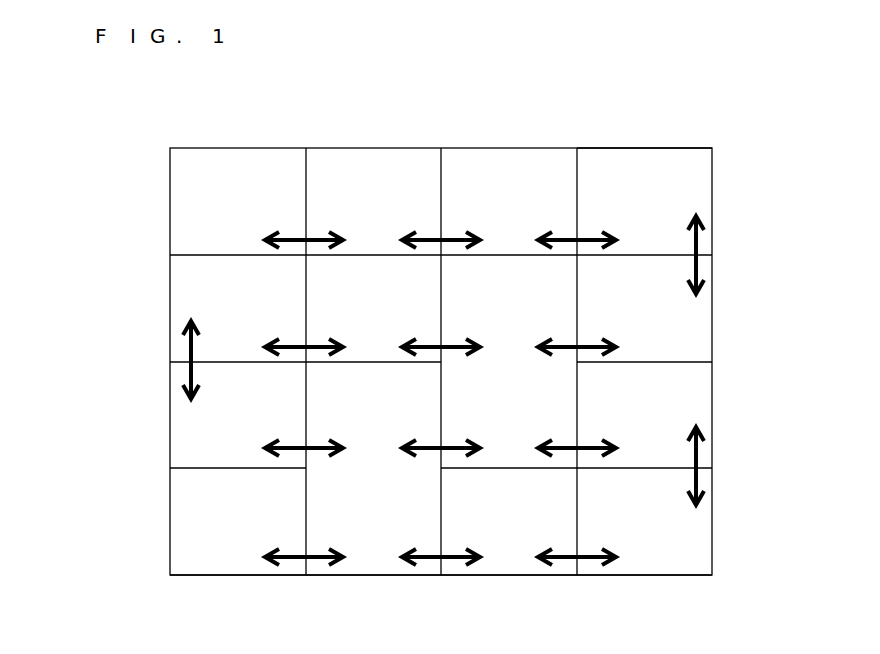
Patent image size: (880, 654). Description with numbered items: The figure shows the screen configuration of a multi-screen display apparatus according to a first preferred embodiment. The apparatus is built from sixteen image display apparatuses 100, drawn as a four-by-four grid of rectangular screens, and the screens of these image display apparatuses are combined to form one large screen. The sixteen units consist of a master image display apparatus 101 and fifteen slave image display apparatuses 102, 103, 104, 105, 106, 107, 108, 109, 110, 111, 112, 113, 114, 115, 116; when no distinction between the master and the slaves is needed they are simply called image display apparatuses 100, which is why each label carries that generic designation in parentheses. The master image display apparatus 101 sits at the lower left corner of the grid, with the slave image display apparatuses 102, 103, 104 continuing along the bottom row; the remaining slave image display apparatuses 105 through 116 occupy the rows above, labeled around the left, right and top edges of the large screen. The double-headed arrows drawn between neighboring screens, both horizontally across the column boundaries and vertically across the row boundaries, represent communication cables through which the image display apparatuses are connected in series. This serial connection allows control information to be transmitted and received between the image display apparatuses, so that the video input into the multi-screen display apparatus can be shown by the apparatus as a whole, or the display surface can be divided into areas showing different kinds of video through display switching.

The image display apparatus 100 is at (441, 361).
The master image display apparatus 101 is at (237, 558).
The slave image display apparatus 102 is at (372, 558).
The slave image display apparatus 103 is at (508, 558).
The slave image display apparatus 104 is at (643, 558).
The slave image display apparatus 105 is at (185, 405).
The slave image display apparatus 106 is at (330, 415).
The slave image display apparatus 107 is at (556, 400).
The slave image display apparatus 108 is at (698, 387).
The slave image display apparatus 109 is at (185, 268).
The slave image display apparatus 110 is at (330, 293).
The slave image display apparatus 111 is at (556, 318).
The slave image display apparatus 112 is at (698, 305).
The slave image display apparatus 113 is at (281, 173).
The slave image display apparatus 114 is at (421, 173).
The slave image display apparatus 115 is at (562, 173).
The slave image display apparatus 116 is at (698, 188).